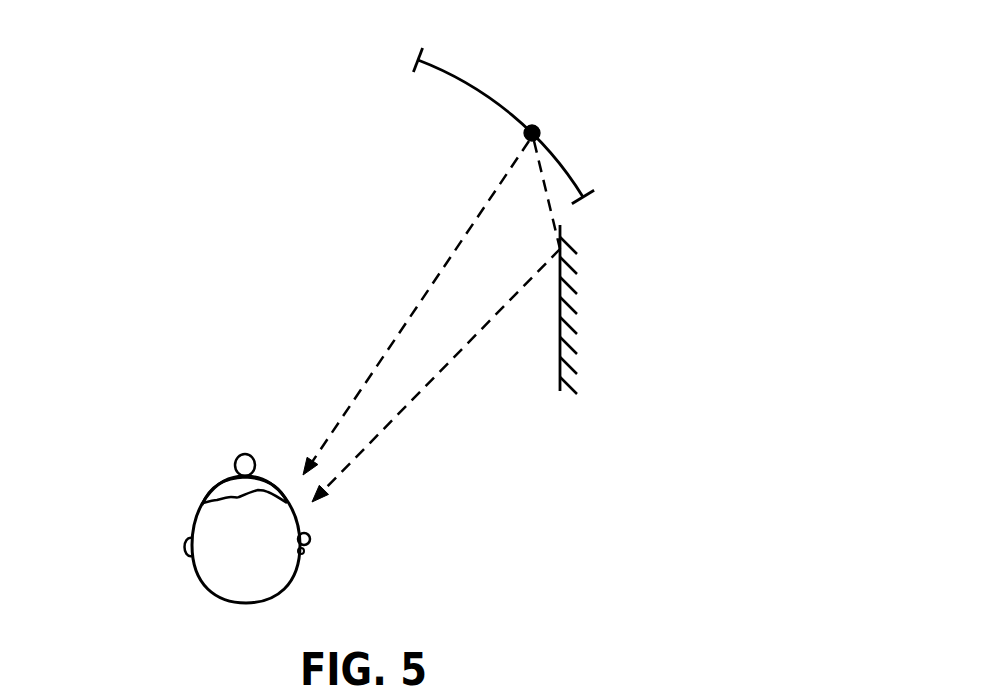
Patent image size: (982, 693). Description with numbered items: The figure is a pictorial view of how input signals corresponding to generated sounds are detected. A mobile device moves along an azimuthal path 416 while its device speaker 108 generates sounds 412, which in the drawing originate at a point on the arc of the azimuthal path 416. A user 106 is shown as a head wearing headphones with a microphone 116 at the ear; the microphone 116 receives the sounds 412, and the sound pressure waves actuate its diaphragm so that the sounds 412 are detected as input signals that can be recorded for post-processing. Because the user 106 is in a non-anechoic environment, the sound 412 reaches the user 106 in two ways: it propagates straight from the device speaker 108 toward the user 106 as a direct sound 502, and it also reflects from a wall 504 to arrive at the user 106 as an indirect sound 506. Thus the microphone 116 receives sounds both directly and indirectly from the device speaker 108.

The user 106 is at (190, 544).
The microphone 116 is at (310, 538).
The azimuthal path 416 is at (448, 70).
The device speaker 108 is at (567, 82).
The sounds 412 is at (539, 125).
The direct sound 502 is at (420, 302).
The wall 504 is at (560, 360).
The indirect sound 506 is at (410, 402).